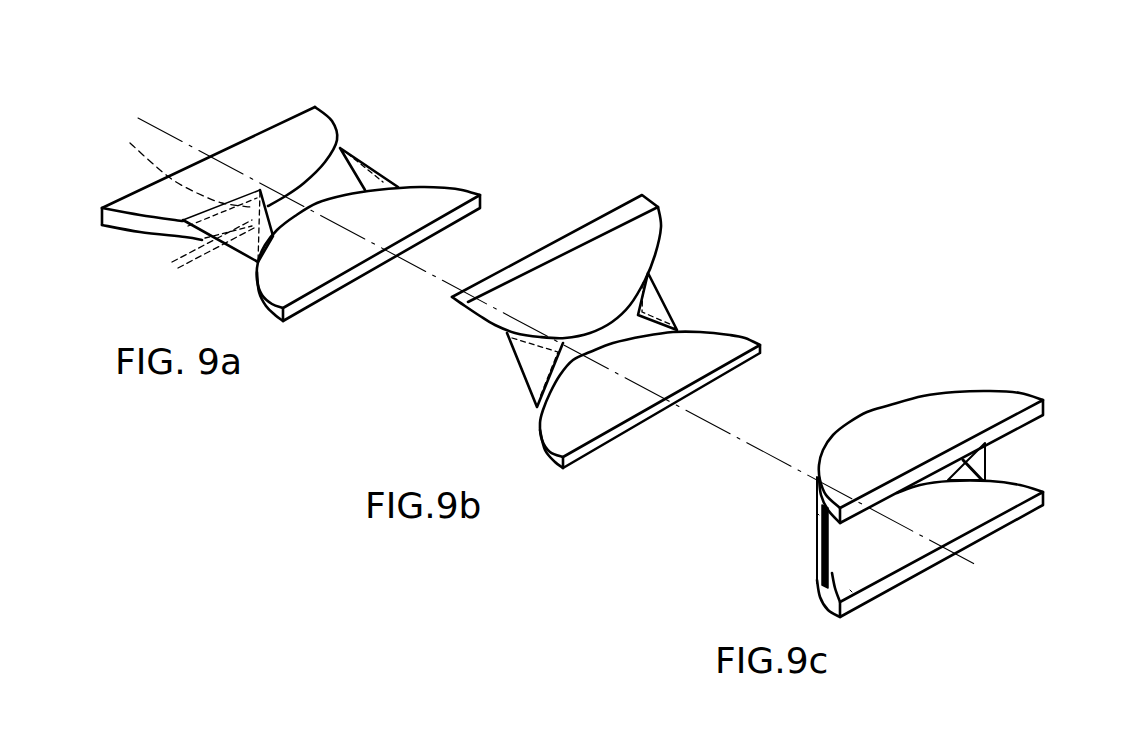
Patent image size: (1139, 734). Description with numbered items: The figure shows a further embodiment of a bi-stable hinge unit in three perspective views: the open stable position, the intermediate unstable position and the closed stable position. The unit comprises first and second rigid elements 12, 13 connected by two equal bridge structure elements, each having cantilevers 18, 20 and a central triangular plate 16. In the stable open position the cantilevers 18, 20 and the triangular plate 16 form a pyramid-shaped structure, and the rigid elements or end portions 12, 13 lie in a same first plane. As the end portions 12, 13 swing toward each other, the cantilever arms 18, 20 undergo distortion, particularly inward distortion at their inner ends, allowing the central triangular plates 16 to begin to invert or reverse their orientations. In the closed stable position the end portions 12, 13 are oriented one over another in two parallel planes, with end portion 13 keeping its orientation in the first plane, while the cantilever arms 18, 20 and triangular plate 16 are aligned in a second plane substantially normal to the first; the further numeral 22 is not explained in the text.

In FIG. 9A, the first rigid element 12 is at (219, 146).
In FIG. 9B, the first rigid element 12 is at (628, 252).
In FIG. 9C, the first rigid element 12 is at (940, 418).
In FIG. 9A, the second rigid element 13 is at (425, 205).
In FIG. 9B, the second rigid element 13 is at (587, 407).
In FIG. 9C, the second rigid element 13 is at (887, 545).
In FIG. 9A, the central triangular plate 16 is at (240, 240).
In FIG. 9B, the central triangular plate 16 is at (655, 305).
In FIG. 9C, the central triangular plate 16 is at (975, 457).
In FIG. 9A, the cantilever 18 is at (377, 178).
In FIG. 9C, the cantilever 18 is at (850, 590).
In FIG. 9A, the cantilever 20 is at (393, 128).
In FIG. 9C, the cantilever 20 is at (817, 513).
In FIG. 9A, the fold line 22 is at (191, 252).